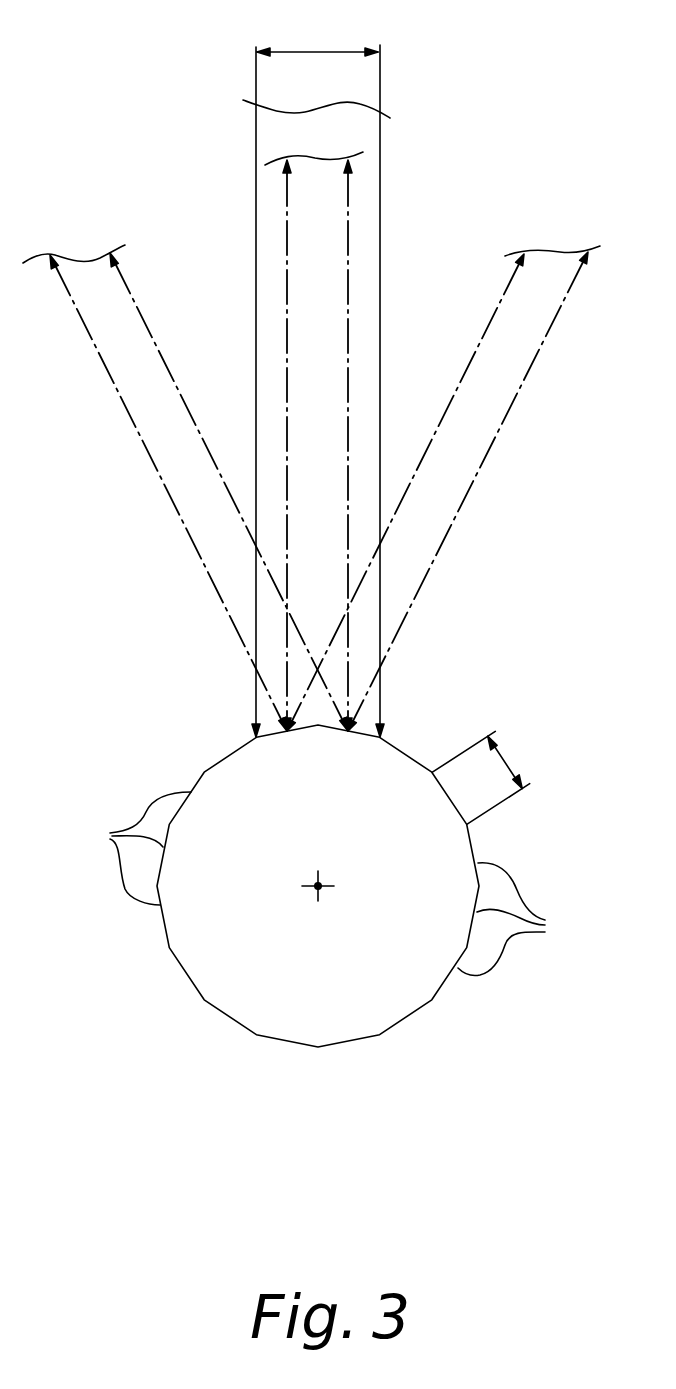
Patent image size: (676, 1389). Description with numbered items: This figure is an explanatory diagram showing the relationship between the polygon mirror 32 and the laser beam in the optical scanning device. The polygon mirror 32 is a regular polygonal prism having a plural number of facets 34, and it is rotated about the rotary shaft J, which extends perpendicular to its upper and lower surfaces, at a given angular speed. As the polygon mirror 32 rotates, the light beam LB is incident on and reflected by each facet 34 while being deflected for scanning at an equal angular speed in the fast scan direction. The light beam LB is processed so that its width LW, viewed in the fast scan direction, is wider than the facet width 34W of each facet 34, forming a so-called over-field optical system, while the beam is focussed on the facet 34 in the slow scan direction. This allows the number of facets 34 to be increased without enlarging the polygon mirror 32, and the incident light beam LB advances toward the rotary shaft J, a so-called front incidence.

The polygon mirror 32 is at (433, 1020).
The facet 34 is at (329, 883).
The facet width 34W is at (510, 757).
The rotary shaft J is at (326, 882).
The light beam LB is at (381, 140).
The width of the light beam LW is at (325, 52).